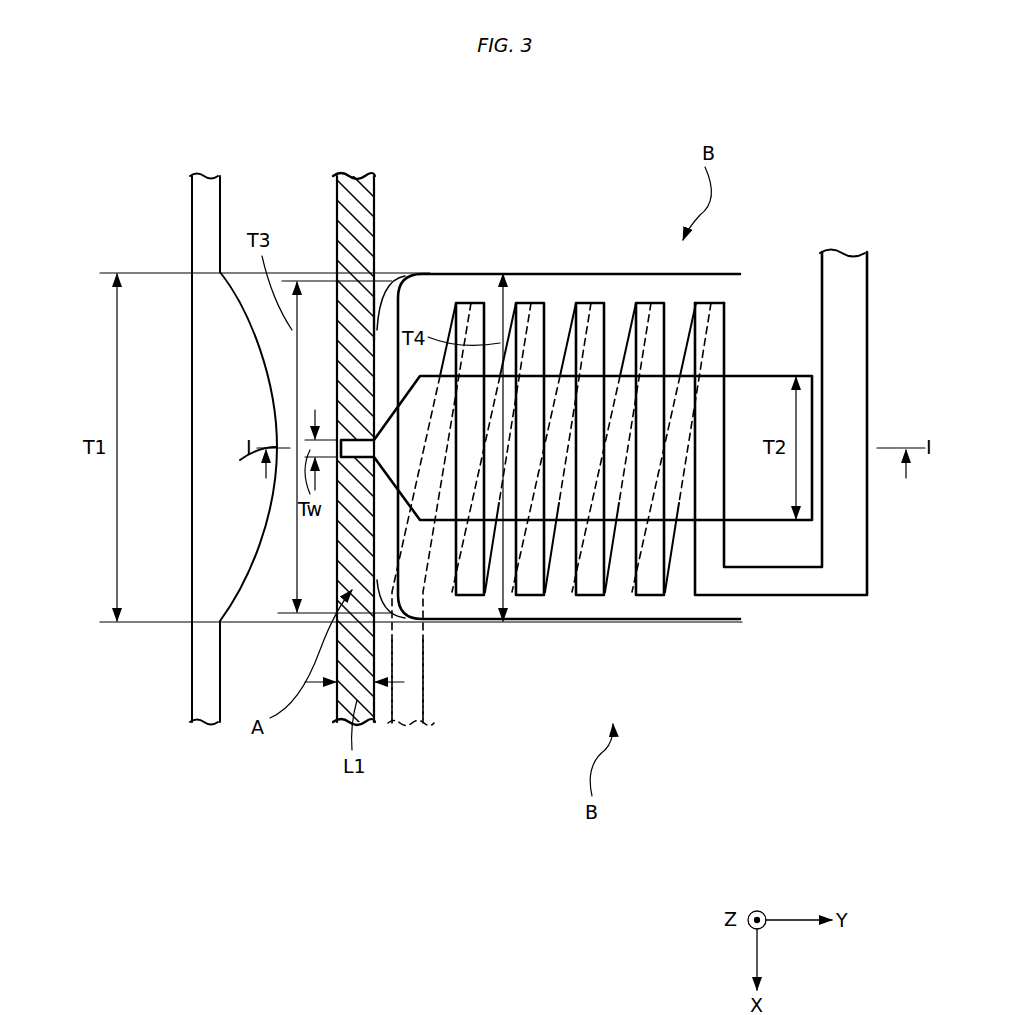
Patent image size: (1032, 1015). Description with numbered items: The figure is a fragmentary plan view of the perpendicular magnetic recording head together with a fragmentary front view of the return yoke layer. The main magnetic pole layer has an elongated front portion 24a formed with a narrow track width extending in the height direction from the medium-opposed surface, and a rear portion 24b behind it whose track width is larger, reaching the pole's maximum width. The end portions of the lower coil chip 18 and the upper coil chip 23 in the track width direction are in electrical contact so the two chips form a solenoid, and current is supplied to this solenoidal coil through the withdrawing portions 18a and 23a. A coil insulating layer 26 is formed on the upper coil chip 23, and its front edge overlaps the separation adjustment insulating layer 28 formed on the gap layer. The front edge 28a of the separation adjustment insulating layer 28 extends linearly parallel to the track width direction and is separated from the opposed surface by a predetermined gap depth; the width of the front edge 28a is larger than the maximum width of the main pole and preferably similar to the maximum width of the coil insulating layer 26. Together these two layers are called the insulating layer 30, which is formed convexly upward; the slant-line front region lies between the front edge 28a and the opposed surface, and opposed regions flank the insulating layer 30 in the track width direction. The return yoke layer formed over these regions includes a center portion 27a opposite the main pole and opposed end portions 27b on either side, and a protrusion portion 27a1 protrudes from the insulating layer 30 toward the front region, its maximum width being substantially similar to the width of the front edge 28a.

The lower coil chip 18 is at (703, 305).
The withdrawing portion 18a is at (415, 697).
The upper coil chip 23 is at (717, 590).
The withdrawing portion 23a is at (842, 578).
The front portion 24a is at (355, 440).
The rear portion 24b is at (756, 502).
The coil insulating layer 26 is at (432, 290).
The center portion 27a is at (200, 400).
The protrusion portion 27a1 is at (243, 470).
The opposed end portions 27b is at (206, 213).
The separation adjustment insulating layer 28 is at (385, 318).
The front edge 28a is at (385, 318).
The insulating layer 30 is at (480, 136).